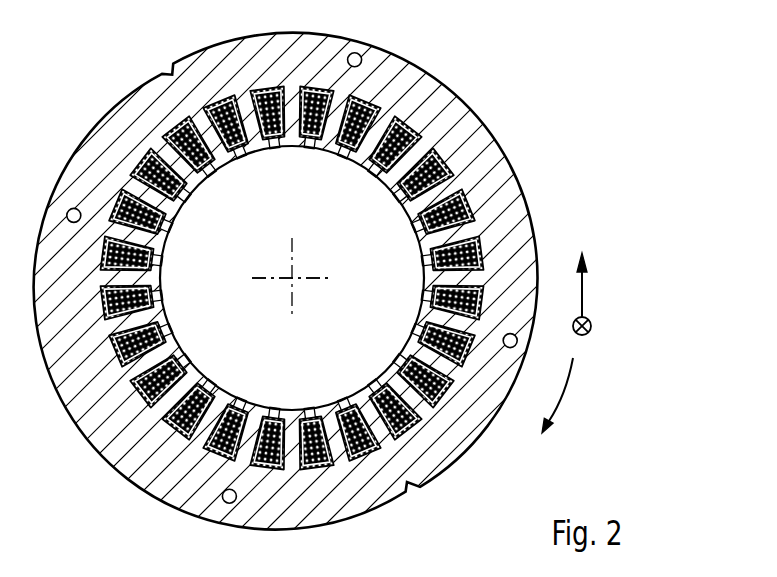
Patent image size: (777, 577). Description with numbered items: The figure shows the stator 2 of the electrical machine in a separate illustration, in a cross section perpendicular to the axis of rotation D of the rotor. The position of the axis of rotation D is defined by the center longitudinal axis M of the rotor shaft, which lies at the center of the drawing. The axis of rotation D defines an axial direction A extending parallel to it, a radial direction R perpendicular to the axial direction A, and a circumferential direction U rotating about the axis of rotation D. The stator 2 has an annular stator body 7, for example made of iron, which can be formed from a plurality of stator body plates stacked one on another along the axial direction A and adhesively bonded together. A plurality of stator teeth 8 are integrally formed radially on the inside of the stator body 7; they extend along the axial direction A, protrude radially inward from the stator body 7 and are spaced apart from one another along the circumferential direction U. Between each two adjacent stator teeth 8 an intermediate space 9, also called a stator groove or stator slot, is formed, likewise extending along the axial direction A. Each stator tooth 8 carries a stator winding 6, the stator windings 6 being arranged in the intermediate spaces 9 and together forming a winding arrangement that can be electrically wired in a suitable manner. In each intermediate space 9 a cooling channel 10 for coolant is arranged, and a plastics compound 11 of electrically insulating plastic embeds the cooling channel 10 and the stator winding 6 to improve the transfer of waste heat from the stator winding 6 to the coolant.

The stator 2 is at (576, 124).
The stator winding 6 is at (163, 133).
The stator body 7 is at (440, 82).
The stator tooth 8 is at (198, 185).
The intermediate space 9 is at (217, 172).
The cooling channel 10 is at (174, 128).
The plastics compound 11 is at (217, 172).
The center longitudinal axis M is at (296, 284).
The axis of rotation D is at (332, 333).
The radial direction R is at (583, 290).
The axial direction A is at (592, 328).
The circumferential direction U is at (563, 392).